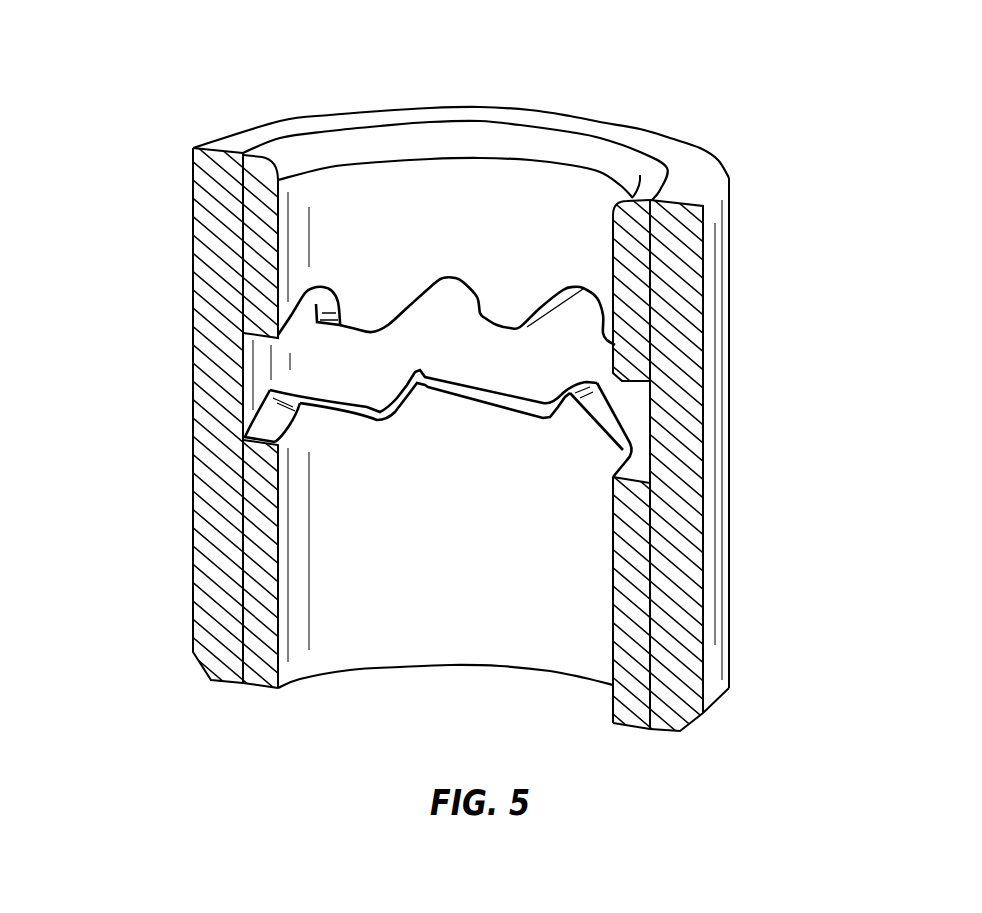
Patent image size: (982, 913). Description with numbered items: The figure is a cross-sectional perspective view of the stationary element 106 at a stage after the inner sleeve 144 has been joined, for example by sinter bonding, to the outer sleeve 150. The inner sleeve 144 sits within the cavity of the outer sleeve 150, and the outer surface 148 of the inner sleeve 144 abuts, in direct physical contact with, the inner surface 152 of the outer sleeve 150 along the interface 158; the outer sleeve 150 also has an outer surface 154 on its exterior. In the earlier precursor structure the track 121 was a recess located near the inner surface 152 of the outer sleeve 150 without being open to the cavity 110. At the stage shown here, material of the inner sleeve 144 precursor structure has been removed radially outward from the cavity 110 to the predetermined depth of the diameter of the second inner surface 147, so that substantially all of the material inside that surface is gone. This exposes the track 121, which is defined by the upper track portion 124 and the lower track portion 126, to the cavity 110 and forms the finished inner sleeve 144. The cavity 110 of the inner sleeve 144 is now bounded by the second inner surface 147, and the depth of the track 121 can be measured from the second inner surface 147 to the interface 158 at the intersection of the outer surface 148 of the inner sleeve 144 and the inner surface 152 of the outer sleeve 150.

The stationary element 106 is at (145, 115).
The cavity 110 is at (497, 190).
The interface 158 is at (670, 172).
The upper track portion 124 is at (300, 267).
The track 121 is at (273, 372).
The lower track portion 126 is at (300, 465).
The inner sleeve 144 is at (633, 283).
The outer sleeve 150 is at (677, 352).
The second inner surface 147 is at (613, 500).
The outer surface of the inner sleeve 148 is at (652, 567).
The inner surface of the outer sleeve 152 is at (653, 604).
The outer surface of the outer sleeve 154 is at (715, 663).